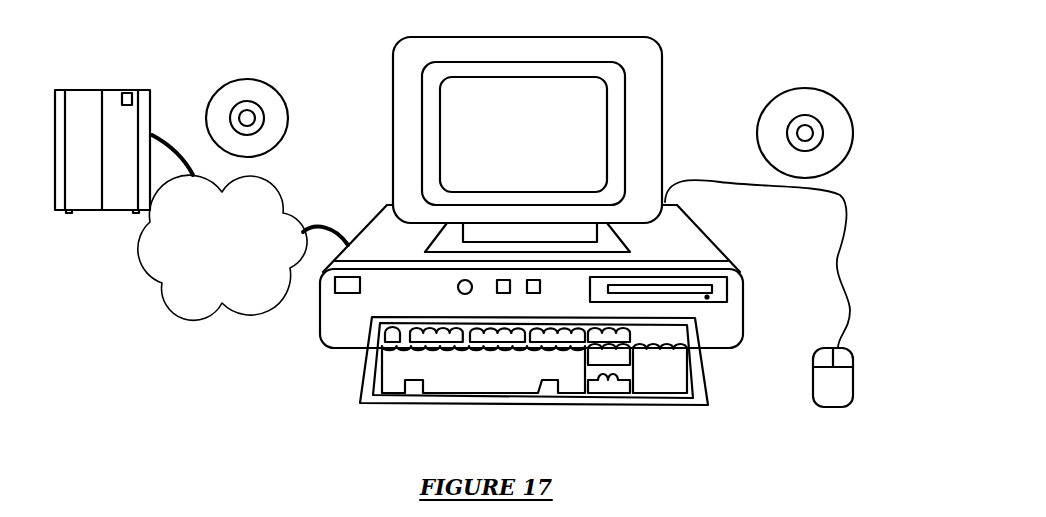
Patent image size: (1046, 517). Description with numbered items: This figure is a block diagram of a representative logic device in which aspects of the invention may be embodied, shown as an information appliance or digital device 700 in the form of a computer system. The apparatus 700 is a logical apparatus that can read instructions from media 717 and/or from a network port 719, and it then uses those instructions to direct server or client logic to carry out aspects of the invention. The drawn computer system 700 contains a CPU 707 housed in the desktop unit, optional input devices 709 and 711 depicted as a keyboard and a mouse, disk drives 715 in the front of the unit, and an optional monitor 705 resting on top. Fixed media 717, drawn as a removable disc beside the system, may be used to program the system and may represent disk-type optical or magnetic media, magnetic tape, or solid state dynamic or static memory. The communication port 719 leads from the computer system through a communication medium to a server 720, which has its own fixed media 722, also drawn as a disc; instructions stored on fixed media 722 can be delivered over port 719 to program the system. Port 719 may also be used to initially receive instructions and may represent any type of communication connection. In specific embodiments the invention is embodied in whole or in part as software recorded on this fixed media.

The information appliance 700 is at (496, 238).
The monitor 705 is at (585, 113).
The CPU 707 is at (700, 243).
The input device 709 is at (435, 405).
The input device 711 is at (853, 375).
The disk drive 715 is at (742, 285).
The fixed media 717 is at (842, 102).
The network port 719 is at (316, 224).
The server 720 is at (133, 90).
The fixed media 722 is at (278, 96).